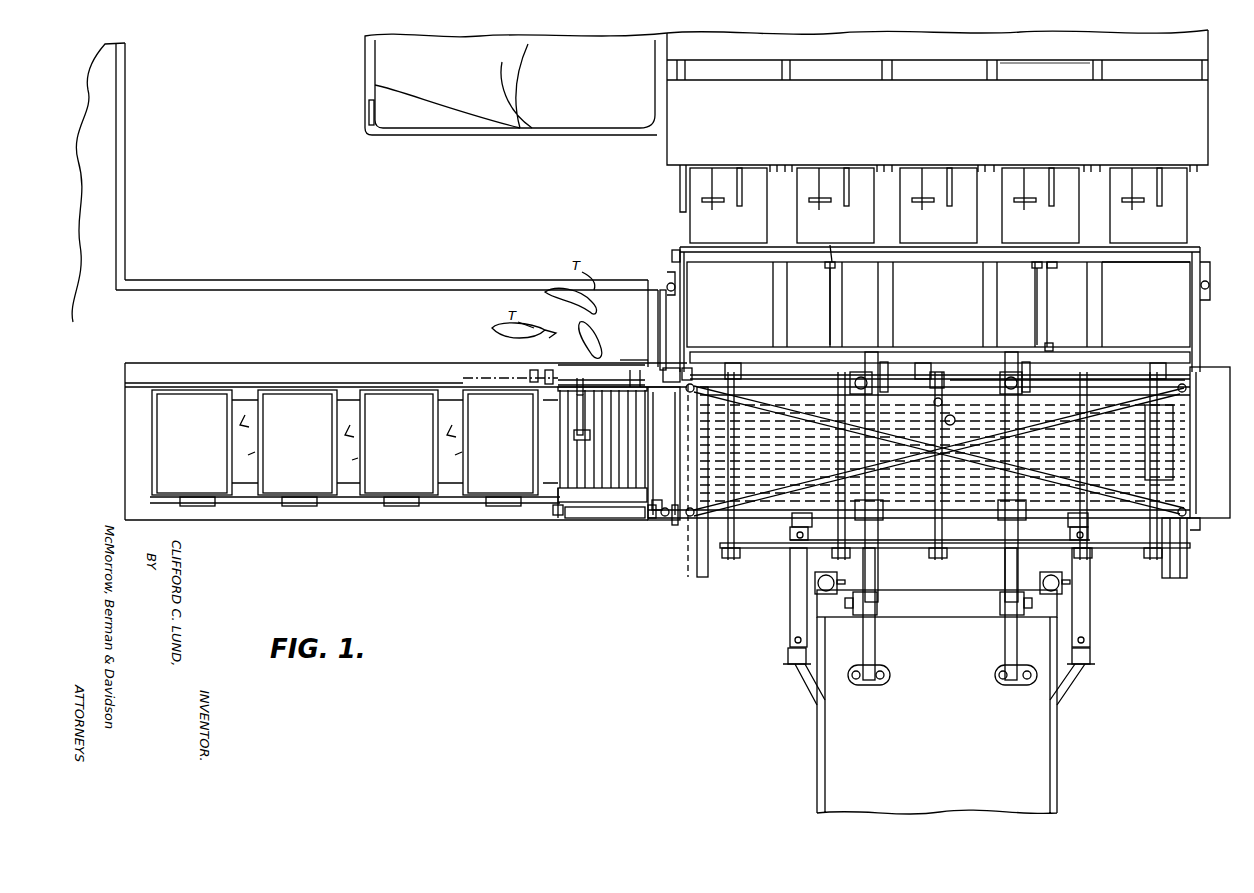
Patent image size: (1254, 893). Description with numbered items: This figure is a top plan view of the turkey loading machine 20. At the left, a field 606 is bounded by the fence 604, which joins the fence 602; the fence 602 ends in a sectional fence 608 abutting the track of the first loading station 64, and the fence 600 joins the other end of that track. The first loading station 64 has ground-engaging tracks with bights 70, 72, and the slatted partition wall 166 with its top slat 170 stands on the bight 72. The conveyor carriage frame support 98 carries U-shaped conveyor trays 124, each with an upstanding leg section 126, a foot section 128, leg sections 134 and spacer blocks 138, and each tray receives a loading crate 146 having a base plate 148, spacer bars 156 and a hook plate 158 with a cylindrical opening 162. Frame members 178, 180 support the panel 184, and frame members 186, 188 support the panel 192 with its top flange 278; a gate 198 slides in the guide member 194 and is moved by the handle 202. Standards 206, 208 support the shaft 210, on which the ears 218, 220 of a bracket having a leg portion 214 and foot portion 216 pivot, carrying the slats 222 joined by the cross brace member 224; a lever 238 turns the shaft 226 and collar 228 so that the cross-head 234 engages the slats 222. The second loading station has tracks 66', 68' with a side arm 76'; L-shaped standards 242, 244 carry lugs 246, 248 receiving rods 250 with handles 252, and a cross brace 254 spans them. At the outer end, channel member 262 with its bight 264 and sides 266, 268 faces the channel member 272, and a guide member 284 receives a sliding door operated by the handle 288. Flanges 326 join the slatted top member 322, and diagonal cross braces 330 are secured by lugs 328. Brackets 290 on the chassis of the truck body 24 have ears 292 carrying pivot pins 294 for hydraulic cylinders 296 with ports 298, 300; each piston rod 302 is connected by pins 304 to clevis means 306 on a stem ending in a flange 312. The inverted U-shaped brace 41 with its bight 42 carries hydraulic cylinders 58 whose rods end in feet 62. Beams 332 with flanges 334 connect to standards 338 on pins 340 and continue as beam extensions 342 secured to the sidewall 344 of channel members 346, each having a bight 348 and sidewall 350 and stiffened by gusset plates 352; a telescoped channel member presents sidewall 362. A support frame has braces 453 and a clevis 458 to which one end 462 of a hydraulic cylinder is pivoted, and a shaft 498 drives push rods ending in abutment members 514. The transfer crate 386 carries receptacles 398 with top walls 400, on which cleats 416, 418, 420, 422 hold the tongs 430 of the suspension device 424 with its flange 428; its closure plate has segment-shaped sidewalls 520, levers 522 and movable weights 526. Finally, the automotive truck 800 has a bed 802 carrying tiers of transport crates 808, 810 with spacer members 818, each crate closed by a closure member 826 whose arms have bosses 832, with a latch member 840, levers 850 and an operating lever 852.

The field 606 is at (110, 156).
The fence 604 is at (127, 190).
The fence 602 is at (198, 280).
The sectional fence 608 is at (648, 275).
The fence 600 is at (134, 353).
The automotive truck 800 is at (655, 156).
The tier of transport crates 808 is at (1208, 122).
The tier of transport crates 810 is at (1208, 50).
The spacer and brace members 818 is at (1093, 72).
The bed 802 is at (1045, 71).
The hollow bosses 832 is at (785, 165).
The closure member 826 is at (1180, 212).
The latch member 840 is at (820, 210).
The levers 850 is at (715, 208).
The lever 852 is at (680, 202).
The cleats 420 is at (834, 262).
The transfer crate 386 is at (1200, 318).
The top walls 400 is at (1221, 300).
The receptacles 398 is at (1090, 303).
The segment-shaped sidewall 520 is at (1210, 268).
The lever 522 is at (1209, 282).
The movable weight 526 is at (1210, 292).
The tongs 430 is at (829, 286).
The cleats 422 is at (1035, 268).
The cleats 416 is at (840, 340).
The suspension device 424 is at (926, 330).
The flange 428 is at (955, 347).
The guide member 284 is at (784, 370).
The cleats 418 is at (1050, 344).
The abutment members 514 is at (728, 352).
The track 68' is at (957, 355).
The bight 348 is at (945, 394).
The side 266 is at (1200, 372).
The braces 453 is at (942, 453).
The brace 41 is at (970, 627).
The lugs 328 is at (722, 423).
The cross braces 330 is at (820, 415).
The slatted top member 322 is at (735, 441).
The channel members 346 is at (868, 360).
The sidewall 350 is at (886, 362).
The sidewall 362 is at (938, 388).
The clevis 458 is at (957, 397).
The sidewall 344 is at (1067, 385).
The beam extensions 342 is at (872, 566).
The flange 312 is at (910, 510).
The end of hydraulic cylinder 462 is at (964, 423).
The gusset plate 352 is at (1030, 430).
The flanges 326 is at (1150, 428).
The piston rod 302 is at (1065, 508).
The clevis means 306 is at (1078, 512).
The pins 304 is at (1090, 545).
The port 298 is at (1086, 544).
The track 66' is at (955, 536).
The side arm 76' is at (768, 532).
The foot 62 is at (948, 570).
The hydraulic cylinders 58 is at (815, 576).
The shaft 498 is at (940, 548).
The truck body 24 is at (1065, 752).
The bight 42 is at (942, 614).
The pins 340 is at (879, 605).
The standards 338 is at (860, 617).
The beams 332 is at (876, 652).
The flanges 334 is at (880, 685).
The hydraulic cylinders 296 is at (790, 618).
The port 300 is at (795, 640).
The pivot pins 294 is at (788, 654).
The ear 292 is at (790, 664).
The brackets 290 is at (802, 678).
The channel member 262 is at (1196, 432).
The bight portion 264 is at (1196, 466).
The side 268 is at (1196, 527).
The channel member 272 is at (1189, 576).
The first loading station 64 is at (358, 353).
The partition wall 166 is at (172, 380).
The top slat 170 is at (196, 385).
The bight 72 is at (385, 366).
The guide member 194 is at (470, 378).
The handle 202 is at (534, 370).
The lever 238 is at (549, 370).
The frame member 180 is at (562, 366).
The collar 228 is at (580, 378).
The cross brace member 224 is at (615, 380).
The shaft 226 is at (636, 378).
The gate 198 is at (628, 370).
The handle 288 is at (640, 355).
The lugs 248 is at (664, 370).
The handles 252 is at (684, 366).
The standard 244 is at (694, 362).
The spacer and reinforcing blocks 138 is at (245, 392).
The leg section 126 is at (283, 382).
The conveyor carriage frame support 98 is at (146, 463).
The base plate 148 is at (345, 442).
The conveyor trays 124 is at (238, 432).
The leg sections 134 is at (258, 453).
The cross-head 234 is at (574, 435).
The panel 184 is at (575, 445).
The slats 222 is at (585, 468).
The frame member 178 is at (556, 510).
The standard 206 is at (556, 518).
The ear 218 is at (560, 522).
The turkey loading machine 20 is at (566, 559).
The foot portion 216 is at (590, 522).
The shaft 210 is at (615, 508).
The leg portion 214 is at (628, 518).
The ear 220 is at (640, 522).
The standard 208 is at (652, 522).
The lugs 246 is at (665, 520).
The standard 242 is at (675, 530).
The rods 250 is at (698, 575).
The frame member 188 is at (664, 453).
The panel 192 is at (664, 419).
The top flange 278 is at (666, 449).
The cross brace 254 is at (690, 458).
The frame member 186 is at (656, 500).
The spacer bars 156 is at (180, 504).
The hook plate 158 is at (202, 508).
The foot section 128 is at (268, 505).
The bight 70 is at (302, 520).
The loading crate 146 is at (330, 505).
The opening 162 is at (400, 505).